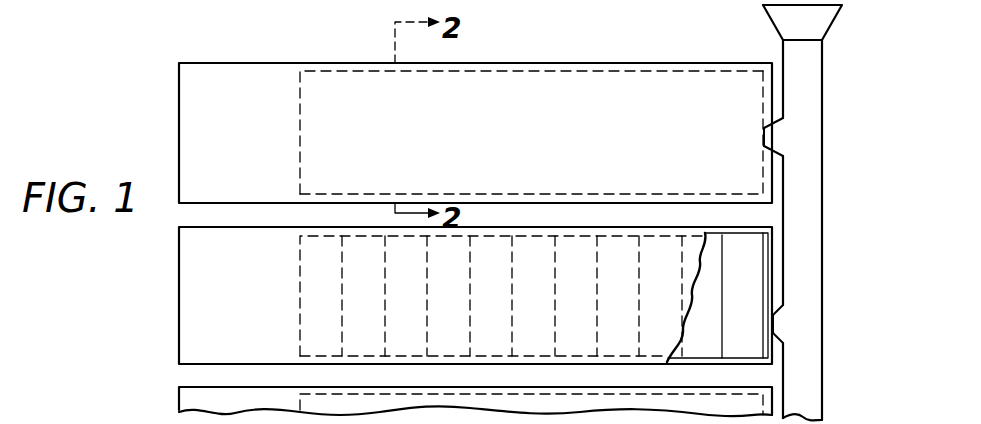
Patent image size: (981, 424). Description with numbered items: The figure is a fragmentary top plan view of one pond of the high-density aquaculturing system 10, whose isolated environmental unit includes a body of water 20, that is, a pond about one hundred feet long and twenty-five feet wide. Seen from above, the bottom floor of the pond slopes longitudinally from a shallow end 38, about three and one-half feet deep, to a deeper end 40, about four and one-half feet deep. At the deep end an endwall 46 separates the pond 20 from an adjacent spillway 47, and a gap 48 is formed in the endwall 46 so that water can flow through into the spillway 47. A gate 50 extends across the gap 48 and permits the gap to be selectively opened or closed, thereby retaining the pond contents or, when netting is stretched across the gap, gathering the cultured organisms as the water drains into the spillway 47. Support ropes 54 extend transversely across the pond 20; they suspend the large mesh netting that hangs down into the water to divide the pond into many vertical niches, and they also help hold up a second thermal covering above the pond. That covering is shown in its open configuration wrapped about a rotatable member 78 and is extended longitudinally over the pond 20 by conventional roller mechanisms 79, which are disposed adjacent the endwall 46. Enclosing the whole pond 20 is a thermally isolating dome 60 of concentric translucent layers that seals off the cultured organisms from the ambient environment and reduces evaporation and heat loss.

The high-density aquaculturing system 10 is at (308, 44).
The body of water 20 is at (493, 131).
The shallow end 38 is at (343, 82).
The deeper end 40 is at (709, 86).
The endwall 46 is at (768, 95).
The spillway 47 is at (805, 190).
The gap 48 is at (766, 131).
The gate 50 is at (766, 143).
The support ropes 54 is at (727, 246).
The thermally isolating dome 60 is at (203, 72).
The rotatable member 78 is at (772, 338).
The roller mechanisms 79 is at (772, 319).